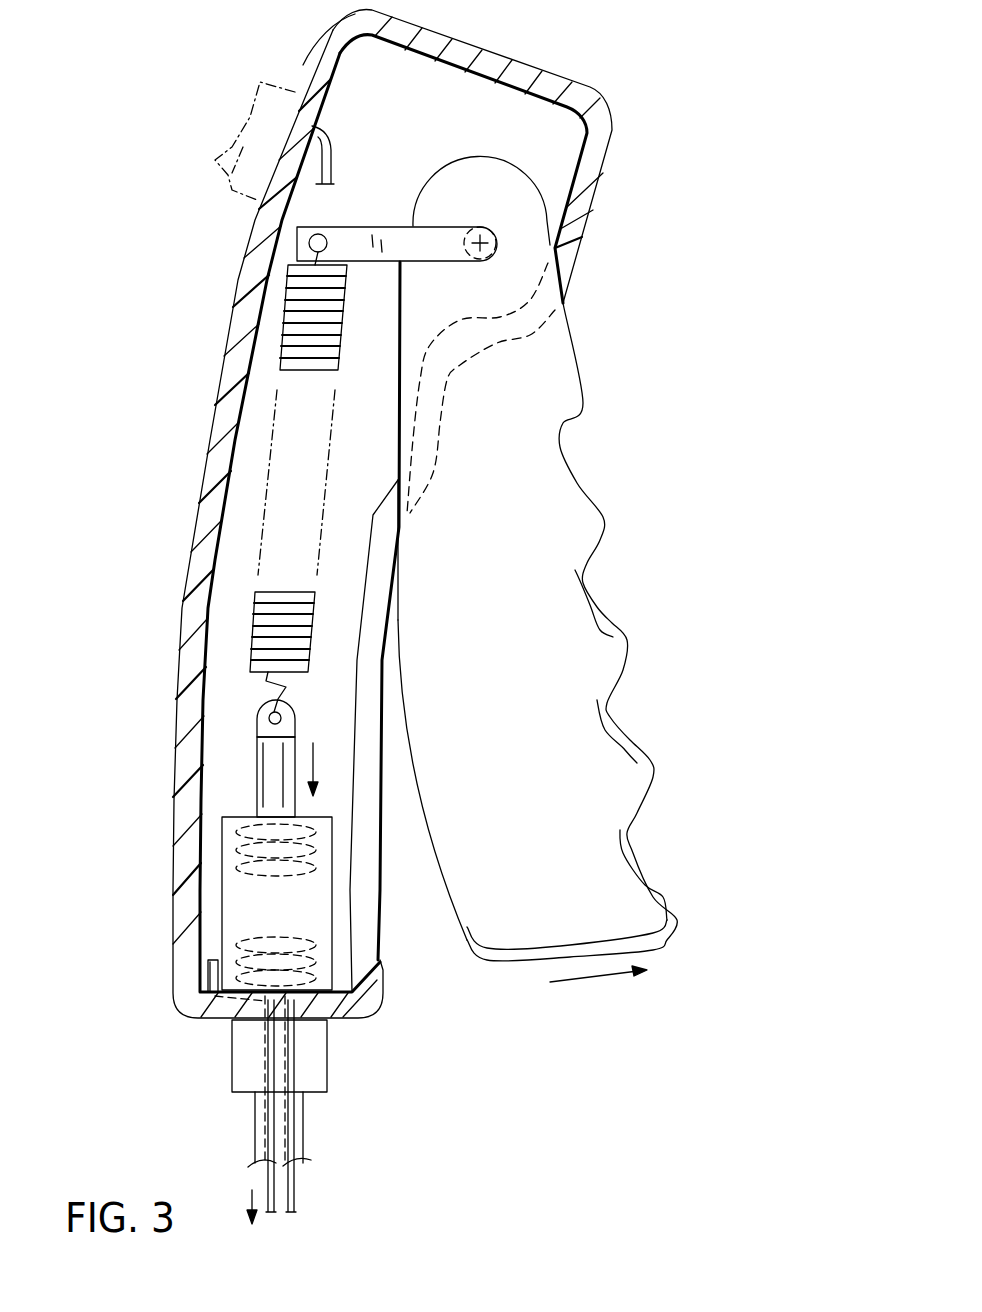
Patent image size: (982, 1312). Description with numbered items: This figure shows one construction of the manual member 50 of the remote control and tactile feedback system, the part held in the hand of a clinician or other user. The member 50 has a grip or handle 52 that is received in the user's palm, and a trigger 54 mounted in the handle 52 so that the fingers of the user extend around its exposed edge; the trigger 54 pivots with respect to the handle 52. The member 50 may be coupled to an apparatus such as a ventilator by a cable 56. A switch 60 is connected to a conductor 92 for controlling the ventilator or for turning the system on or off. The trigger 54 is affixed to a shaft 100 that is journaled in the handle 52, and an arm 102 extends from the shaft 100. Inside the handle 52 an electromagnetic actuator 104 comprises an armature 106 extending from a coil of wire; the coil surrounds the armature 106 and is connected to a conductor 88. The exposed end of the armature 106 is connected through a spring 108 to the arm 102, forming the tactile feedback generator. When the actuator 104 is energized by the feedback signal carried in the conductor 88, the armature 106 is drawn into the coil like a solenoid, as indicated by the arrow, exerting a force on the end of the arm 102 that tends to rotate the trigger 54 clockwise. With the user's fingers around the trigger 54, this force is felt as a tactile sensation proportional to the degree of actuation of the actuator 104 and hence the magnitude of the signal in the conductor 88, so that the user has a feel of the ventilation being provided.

The member 50 is at (236, 232).
The handle 52 is at (178, 618).
The trigger 54 is at (577, 483).
The cable 56 is at (305, 1126).
The switch 60 is at (253, 102).
The conductor 88 is at (297, 1190).
The conductor 92 is at (327, 160).
The shaft 100 is at (488, 237).
The arm 102 is at (360, 227).
The electromagnetic actuator 104 is at (222, 890).
The armature 106 is at (257, 767).
The spring 108 is at (283, 303).